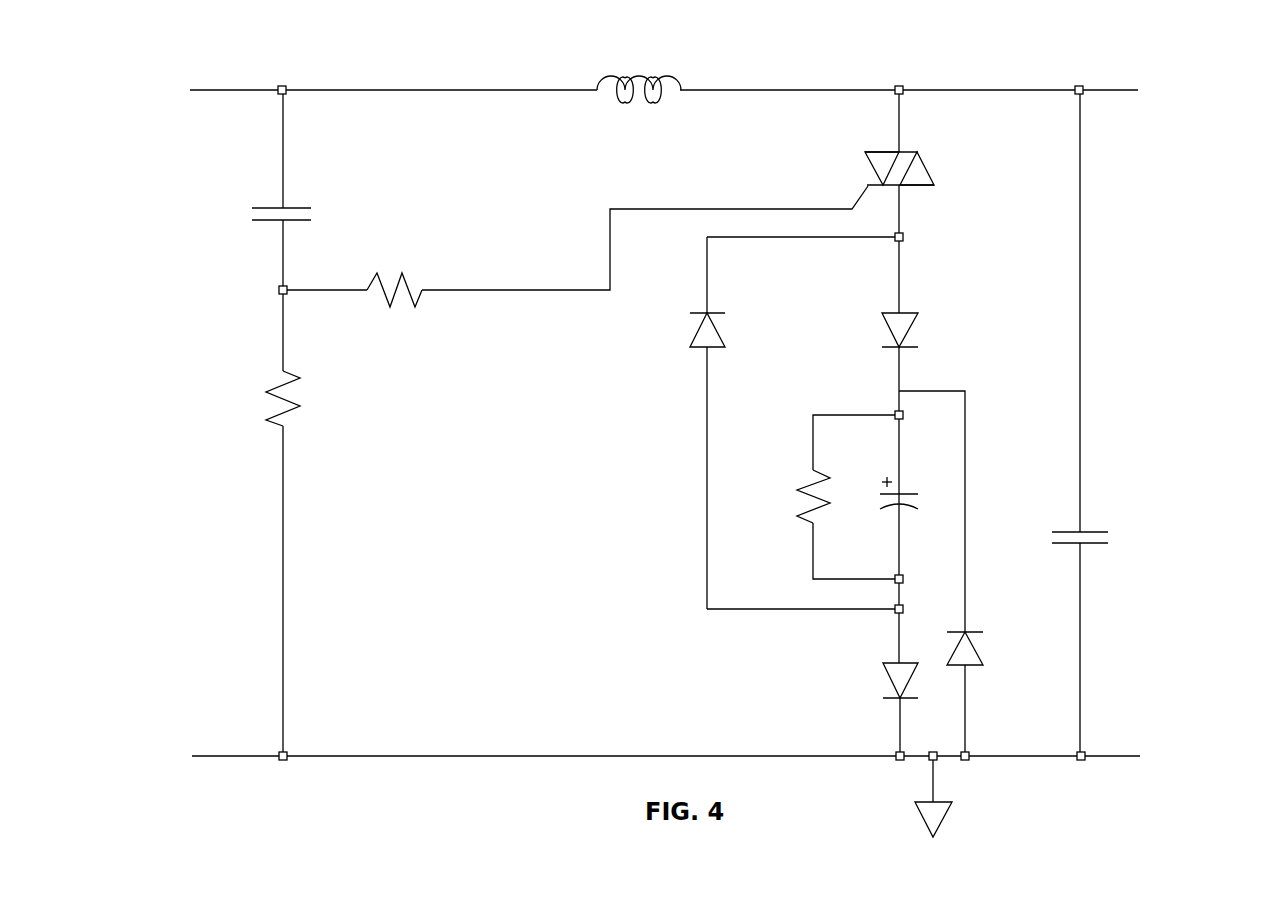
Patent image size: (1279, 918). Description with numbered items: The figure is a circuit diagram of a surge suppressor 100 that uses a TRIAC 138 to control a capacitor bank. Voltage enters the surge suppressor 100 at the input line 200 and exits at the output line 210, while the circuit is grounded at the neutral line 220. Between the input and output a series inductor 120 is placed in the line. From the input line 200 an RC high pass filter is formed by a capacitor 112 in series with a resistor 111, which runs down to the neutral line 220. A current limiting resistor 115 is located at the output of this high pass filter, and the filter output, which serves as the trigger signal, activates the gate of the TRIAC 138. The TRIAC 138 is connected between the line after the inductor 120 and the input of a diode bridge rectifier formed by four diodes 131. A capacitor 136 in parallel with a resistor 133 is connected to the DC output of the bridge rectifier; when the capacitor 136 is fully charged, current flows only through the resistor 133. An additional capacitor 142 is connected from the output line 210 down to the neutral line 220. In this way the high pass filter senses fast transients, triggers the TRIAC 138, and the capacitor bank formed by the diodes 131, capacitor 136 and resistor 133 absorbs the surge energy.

The surge suppressor 100 is at (1125, 40).
The input line 200 is at (224, 90).
The output line 210 is at (1113, 95).
The neutral line 220 is at (228, 758).
The series inductor 120 is at (658, 72).
The capacitor 112 is at (264, 207).
The resistor 111 is at (276, 385).
The current limiting resistor 115 is at (401, 271).
The TRIAC 138 is at (930, 170).
The diodes 131 is at (908, 312).
The resistor 133 is at (800, 490).
The capacitor 136 is at (912, 491).
The additional capacitor 142 is at (1095, 532).